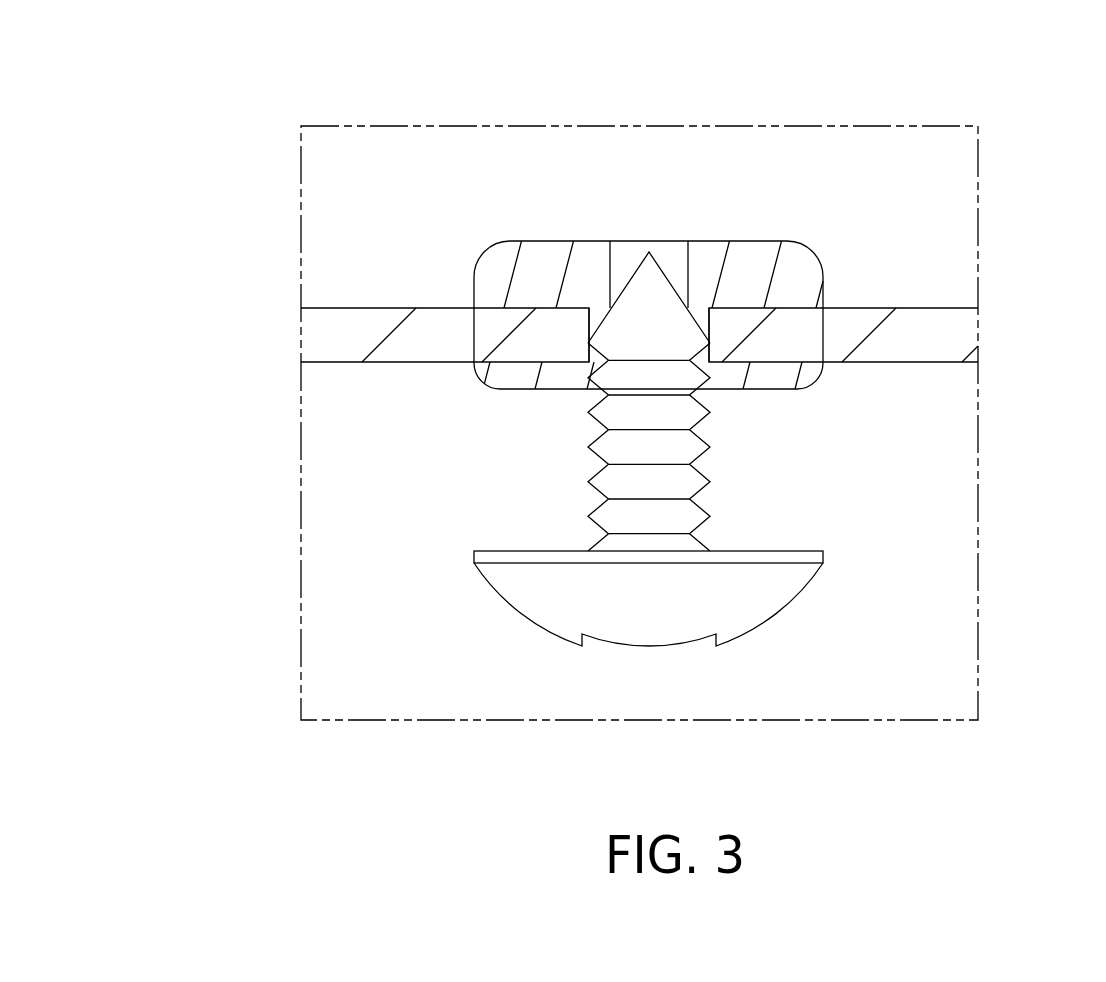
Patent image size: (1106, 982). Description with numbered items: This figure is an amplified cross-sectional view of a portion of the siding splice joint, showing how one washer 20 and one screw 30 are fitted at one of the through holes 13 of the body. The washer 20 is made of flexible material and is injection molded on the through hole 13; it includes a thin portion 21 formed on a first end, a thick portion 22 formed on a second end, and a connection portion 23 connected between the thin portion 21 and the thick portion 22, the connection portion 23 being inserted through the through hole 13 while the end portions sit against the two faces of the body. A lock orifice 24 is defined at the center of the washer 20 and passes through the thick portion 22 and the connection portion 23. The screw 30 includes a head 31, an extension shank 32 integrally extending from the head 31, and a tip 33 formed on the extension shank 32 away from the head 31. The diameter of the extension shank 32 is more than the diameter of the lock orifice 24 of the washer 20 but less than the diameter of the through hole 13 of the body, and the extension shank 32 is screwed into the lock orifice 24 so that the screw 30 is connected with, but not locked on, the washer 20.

The through hole 13 is at (588, 333).
The washer 20 is at (761, 264).
The thin portion 21 is at (820, 377).
The thick portion 22 is at (823, 280).
The connection portion 23 is at (706, 327).
The lock orifice 24 is at (625, 257).
The screw 30 is at (491, 420).
The head 31 is at (545, 600).
The extension shank 32 is at (596, 448).
The tip 33 is at (650, 252).